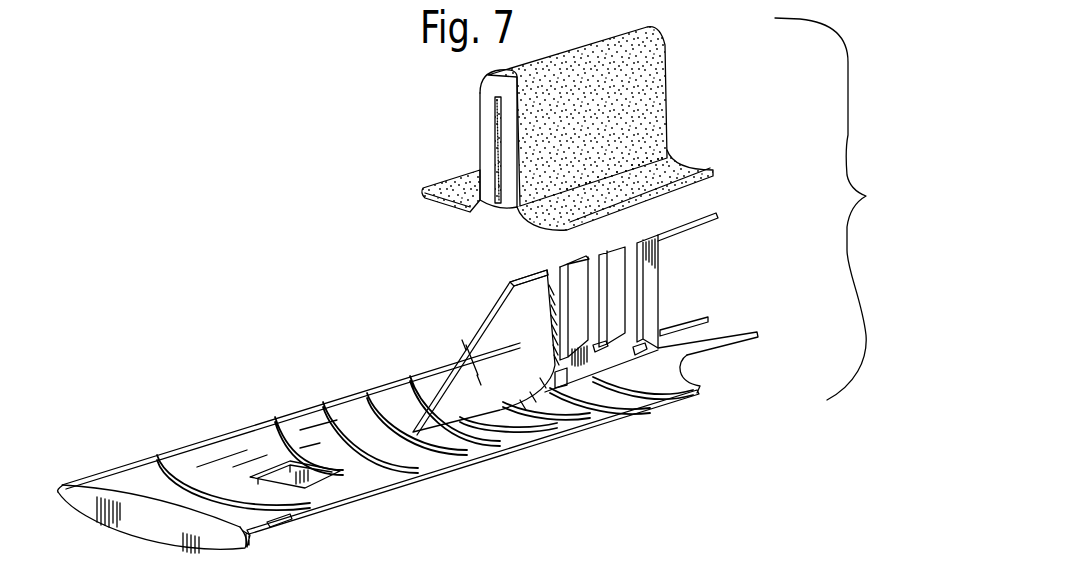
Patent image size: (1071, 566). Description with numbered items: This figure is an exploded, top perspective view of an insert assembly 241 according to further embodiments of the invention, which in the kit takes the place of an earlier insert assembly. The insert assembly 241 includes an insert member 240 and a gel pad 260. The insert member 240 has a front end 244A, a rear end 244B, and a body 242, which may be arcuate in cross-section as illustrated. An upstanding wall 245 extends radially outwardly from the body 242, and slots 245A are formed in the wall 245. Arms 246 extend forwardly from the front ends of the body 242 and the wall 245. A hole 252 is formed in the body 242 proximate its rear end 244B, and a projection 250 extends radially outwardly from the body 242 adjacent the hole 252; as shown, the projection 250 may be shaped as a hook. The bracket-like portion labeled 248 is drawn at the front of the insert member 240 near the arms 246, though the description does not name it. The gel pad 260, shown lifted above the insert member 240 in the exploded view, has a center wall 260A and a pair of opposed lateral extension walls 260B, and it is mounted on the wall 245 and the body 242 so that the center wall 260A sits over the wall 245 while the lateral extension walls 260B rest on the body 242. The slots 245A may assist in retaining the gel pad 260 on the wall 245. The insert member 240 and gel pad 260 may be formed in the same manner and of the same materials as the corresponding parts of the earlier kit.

The insert member 240 is at (437, 445).
The insert assembly 241 is at (724, 135).
The body 242 is at (313, 407).
The front end 244A is at (758, 334).
The rear end 244B is at (137, 527).
The upstanding wall 245 is at (480, 335).
The slots 245A is at (588, 250).
The arms 246 is at (718, 213).
The bracket with tines 248 is at (685, 290).
The projection 250 is at (290, 518).
The hole 252 is at (250, 427).
The gel pad 260 is at (561, 129).
The center wall 260A is at (597, 78).
The lateral extension walls 260B is at (447, 188).